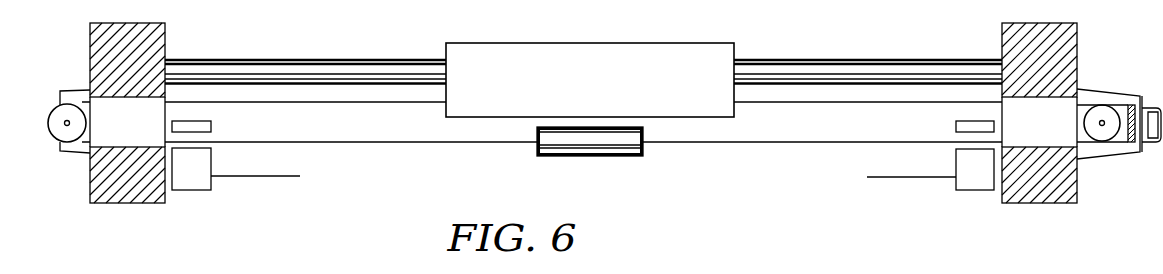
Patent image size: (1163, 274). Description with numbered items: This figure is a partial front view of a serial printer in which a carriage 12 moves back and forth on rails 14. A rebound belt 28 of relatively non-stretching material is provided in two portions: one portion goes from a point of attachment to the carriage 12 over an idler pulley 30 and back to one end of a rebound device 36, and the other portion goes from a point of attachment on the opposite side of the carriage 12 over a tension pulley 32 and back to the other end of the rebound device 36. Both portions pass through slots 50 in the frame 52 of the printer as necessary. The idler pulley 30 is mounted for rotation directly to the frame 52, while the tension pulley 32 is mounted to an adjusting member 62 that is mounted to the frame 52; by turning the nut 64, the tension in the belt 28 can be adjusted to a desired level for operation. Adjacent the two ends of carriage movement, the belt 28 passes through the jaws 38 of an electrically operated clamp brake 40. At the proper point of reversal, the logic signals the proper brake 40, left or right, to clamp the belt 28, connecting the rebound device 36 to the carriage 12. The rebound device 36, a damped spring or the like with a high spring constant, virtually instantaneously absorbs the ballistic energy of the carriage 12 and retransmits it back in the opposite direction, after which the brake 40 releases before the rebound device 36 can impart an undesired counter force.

The carriage 12 is at (590, 80).
The rails 14 is at (333, 70).
The rebound belt 28 is at (357, 143).
The idler pulley 30 is at (67, 107).
The tension pulley 32 is at (1098, 133).
The rebound device 36 is at (597, 138).
The jaws 38 is at (198, 154).
The clamp brake 40 is at (195, 180).
The slots 50 is at (583, 122).
The frame 52 is at (160, 40).
The adjusting member 62 is at (1102, 83).
The nut 64 is at (1150, 137).